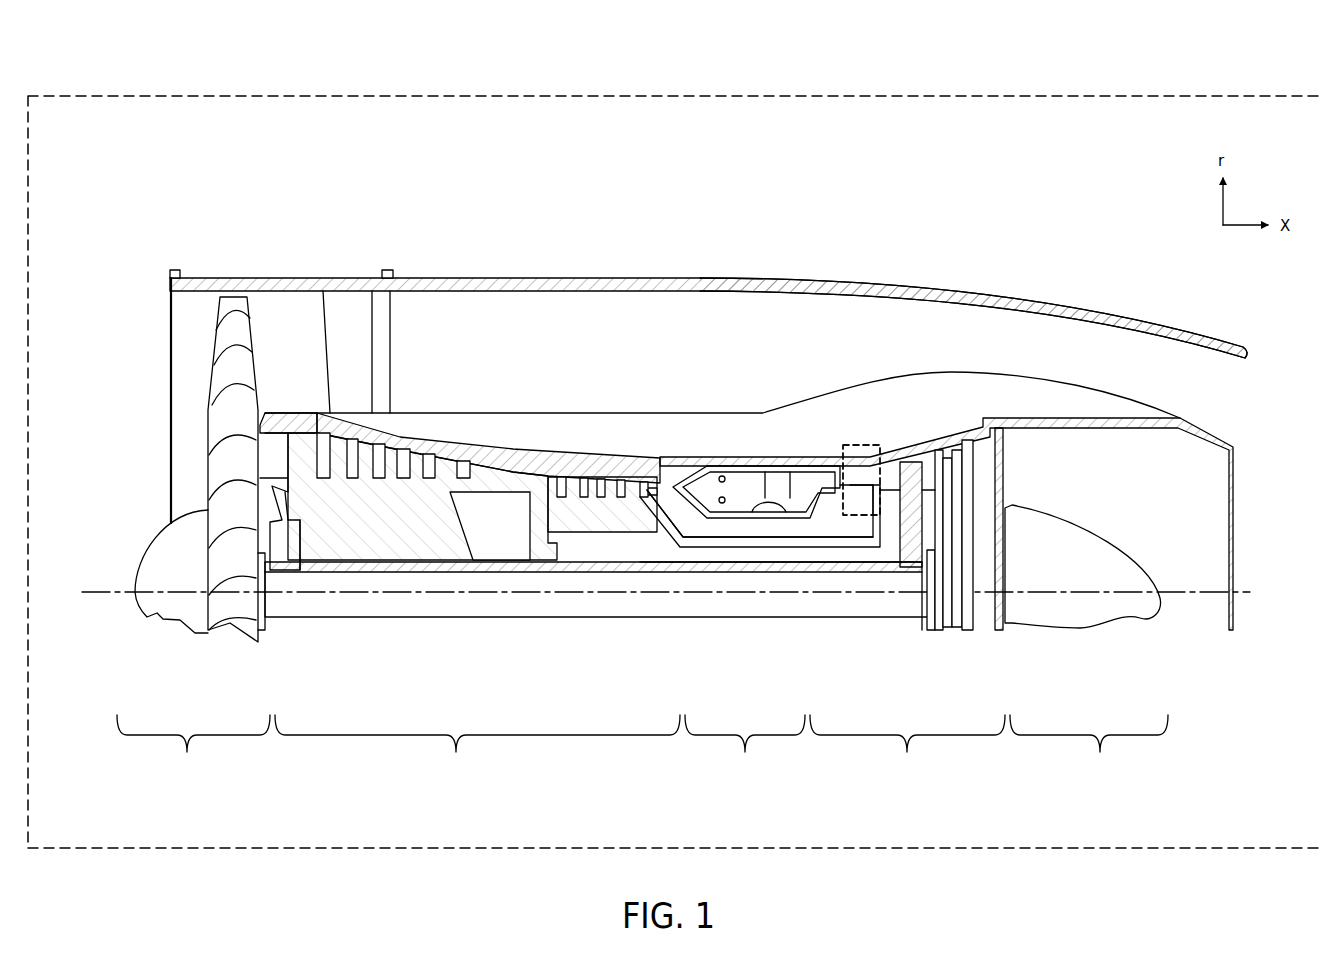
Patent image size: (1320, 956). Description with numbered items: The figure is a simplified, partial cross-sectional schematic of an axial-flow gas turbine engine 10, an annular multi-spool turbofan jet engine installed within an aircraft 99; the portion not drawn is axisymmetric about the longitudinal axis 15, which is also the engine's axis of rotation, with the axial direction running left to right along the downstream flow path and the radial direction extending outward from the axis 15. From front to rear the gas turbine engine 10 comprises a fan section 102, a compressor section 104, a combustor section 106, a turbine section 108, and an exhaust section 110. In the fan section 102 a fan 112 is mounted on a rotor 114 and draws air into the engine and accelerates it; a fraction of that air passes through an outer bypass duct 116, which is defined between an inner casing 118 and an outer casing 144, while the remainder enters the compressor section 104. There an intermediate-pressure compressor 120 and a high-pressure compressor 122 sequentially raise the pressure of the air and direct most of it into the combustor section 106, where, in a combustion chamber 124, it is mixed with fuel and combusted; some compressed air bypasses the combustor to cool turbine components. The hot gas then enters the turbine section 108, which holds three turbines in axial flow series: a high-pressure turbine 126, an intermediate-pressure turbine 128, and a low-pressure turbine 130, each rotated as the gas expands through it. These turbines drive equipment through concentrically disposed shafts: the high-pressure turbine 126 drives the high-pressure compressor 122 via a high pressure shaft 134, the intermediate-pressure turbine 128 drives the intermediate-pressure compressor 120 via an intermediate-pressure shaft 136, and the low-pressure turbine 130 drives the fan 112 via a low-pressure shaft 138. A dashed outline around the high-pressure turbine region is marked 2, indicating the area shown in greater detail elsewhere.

The aircraft 99 is at (1174, 90).
The gas turbine engine 10 is at (418, 215).
The longitudinal axis 15 is at (100, 590).
The fan section 102 is at (193, 751).
The compressor section 104 is at (477, 751).
The combustor section 106 is at (745, 751).
The turbine section 108 is at (907, 751).
The exhaust section 110 is at (1089, 751).
The fan 112 is at (218, 408).
The rotor 114 is at (256, 642).
The outer bypass duct 116 is at (595, 300).
The inner casing 118 is at (470, 420).
The intermediate-pressure compressor 120 is at (388, 555).
The high-pressure compressor 122 is at (607, 520).
The combustion chamber 124 is at (792, 475).
The high-pressure turbine 126 is at (860, 470).
The intermediate-pressure turbine 128 is at (930, 455).
The low-pressure turbine 130 is at (997, 438).
The high pressure shaft 134 is at (718, 548).
The intermediate-pressure shaft 136 is at (790, 572).
The low-pressure shaft 138 is at (888, 608).
The outer casing 144 is at (716, 278).
The detail region of FIG. 2 is at (872, 442).